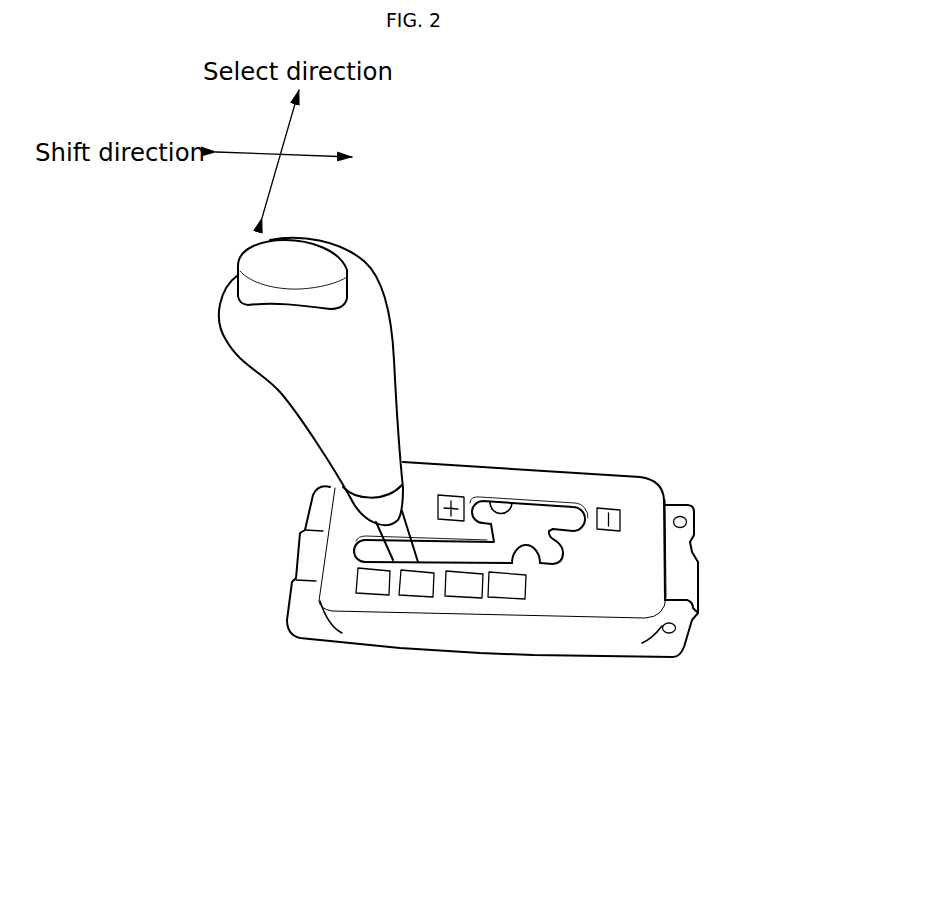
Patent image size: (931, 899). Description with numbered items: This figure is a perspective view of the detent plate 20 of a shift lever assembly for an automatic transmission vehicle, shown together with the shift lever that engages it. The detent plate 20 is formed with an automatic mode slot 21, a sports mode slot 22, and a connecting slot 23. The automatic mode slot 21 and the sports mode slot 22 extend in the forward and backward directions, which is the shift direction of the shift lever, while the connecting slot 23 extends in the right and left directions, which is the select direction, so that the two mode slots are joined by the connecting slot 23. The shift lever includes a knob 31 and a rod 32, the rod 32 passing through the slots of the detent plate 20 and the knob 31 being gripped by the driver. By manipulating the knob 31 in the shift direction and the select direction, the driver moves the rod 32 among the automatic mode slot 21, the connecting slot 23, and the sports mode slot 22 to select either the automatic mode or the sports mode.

The detent plate 20 is at (646, 570).
The automatic mode slot 21 is at (545, 570).
The sports mode slot 22 is at (490, 510).
The connecting slot 23 is at (538, 527).
The knob 31 is at (392, 527).
The rod 32 is at (372, 313).